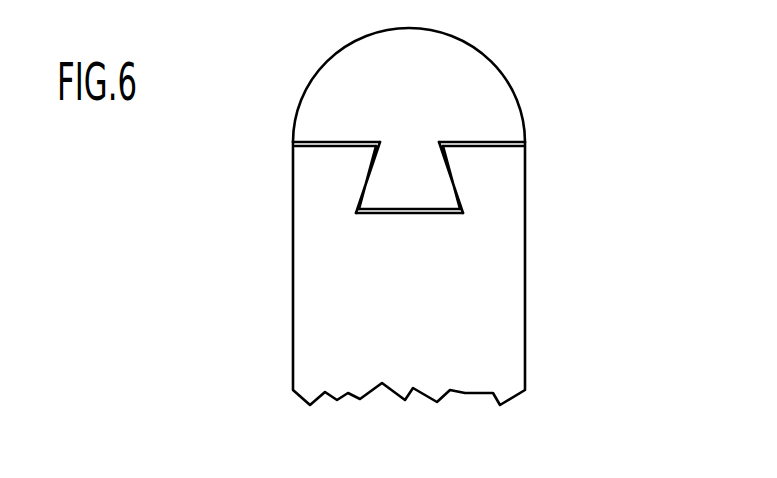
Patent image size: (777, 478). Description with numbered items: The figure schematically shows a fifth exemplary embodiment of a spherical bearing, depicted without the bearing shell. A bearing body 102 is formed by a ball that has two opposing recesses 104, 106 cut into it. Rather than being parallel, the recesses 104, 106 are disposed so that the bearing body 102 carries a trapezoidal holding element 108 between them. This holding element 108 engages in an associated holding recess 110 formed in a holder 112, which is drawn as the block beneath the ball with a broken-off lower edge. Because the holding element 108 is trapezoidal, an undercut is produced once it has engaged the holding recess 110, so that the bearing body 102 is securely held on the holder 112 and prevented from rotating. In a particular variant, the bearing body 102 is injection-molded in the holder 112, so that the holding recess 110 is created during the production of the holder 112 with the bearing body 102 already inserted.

The bearing body 102 is at (477, 78).
The recess 104 is at (372, 170).
The recess 106 is at (448, 163).
The trapezoidal holding element 108 is at (380, 192).
The holding recess 110 is at (413, 207).
The holder 112 is at (488, 320).